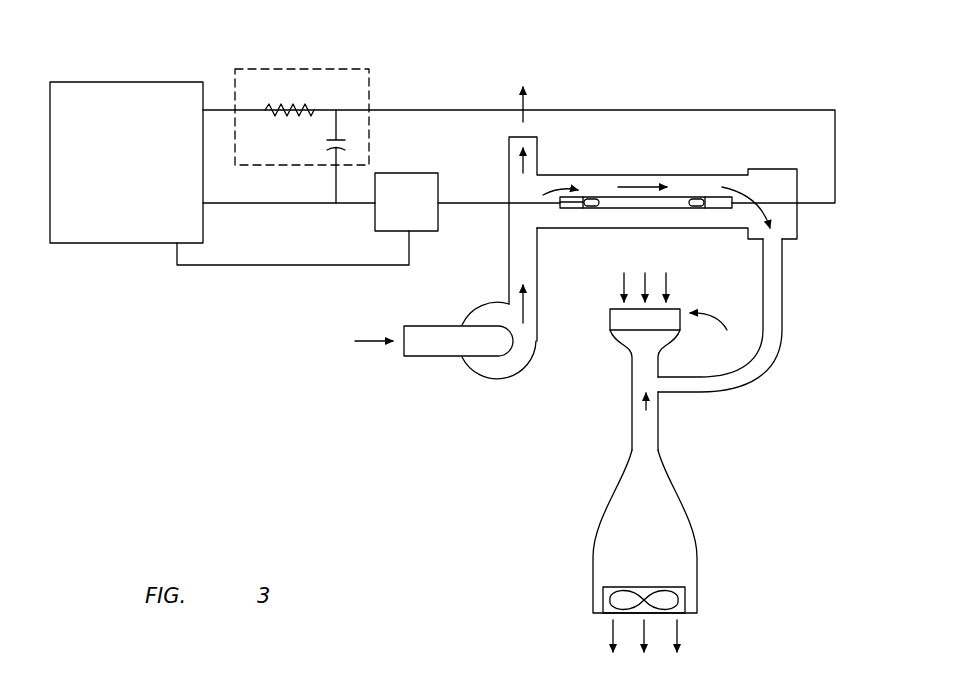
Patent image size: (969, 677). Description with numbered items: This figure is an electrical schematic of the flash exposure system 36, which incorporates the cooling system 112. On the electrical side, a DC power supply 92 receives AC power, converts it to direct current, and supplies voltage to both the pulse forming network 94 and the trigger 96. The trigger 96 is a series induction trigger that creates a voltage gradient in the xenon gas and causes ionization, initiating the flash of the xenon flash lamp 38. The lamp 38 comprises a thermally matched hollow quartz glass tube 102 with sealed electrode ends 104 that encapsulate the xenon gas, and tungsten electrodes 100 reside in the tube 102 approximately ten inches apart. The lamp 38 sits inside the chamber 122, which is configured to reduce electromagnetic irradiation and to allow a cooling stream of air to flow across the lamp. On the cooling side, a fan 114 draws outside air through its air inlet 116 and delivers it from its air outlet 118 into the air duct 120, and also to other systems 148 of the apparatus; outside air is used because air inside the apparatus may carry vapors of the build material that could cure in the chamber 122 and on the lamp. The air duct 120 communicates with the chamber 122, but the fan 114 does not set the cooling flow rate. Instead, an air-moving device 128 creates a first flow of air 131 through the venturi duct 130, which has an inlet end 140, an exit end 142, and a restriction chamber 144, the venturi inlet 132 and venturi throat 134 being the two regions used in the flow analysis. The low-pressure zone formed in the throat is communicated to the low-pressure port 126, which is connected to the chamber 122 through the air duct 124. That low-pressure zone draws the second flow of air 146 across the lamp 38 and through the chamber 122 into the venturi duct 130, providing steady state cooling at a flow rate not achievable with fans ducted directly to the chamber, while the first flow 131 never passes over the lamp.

The flash exposure system 36 is at (465, 60).
The xenon flash lamp 38 is at (685, 197).
The DC power supply 92 is at (126, 162).
The pulse forming network 94 is at (260, 69).
The trigger 96 is at (406, 202).
The tungsten electrodes 100 is at (593, 197).
The hollow quartz glass tube 102 is at (598, 210).
The sealed electrode ends 104 is at (575, 190).
The cooling system 112 is at (480, 448).
The fan 114 is at (467, 323).
The air inlet 116 is at (404, 352).
The air outlet 118 is at (537, 313).
The air duct 120 is at (509, 257).
The chamber 122 is at (680, 228).
The air duct 124 is at (782, 330).
The low-pressure port 126 is at (665, 393).
The air-moving device 128 is at (612, 587).
The venturi duct 130 is at (688, 495).
The first flow of air 131 is at (665, 278).
The venturi inlet 132 is at (535, 137).
The venturi throat 134 is at (625, 388).
The inlet end 140 is at (678, 308).
The exit end 142 is at (603, 613).
The restriction chamber 144 is at (633, 398).
The second flow of air 146 is at (762, 178).
The other systems 148 is at (510, 102).